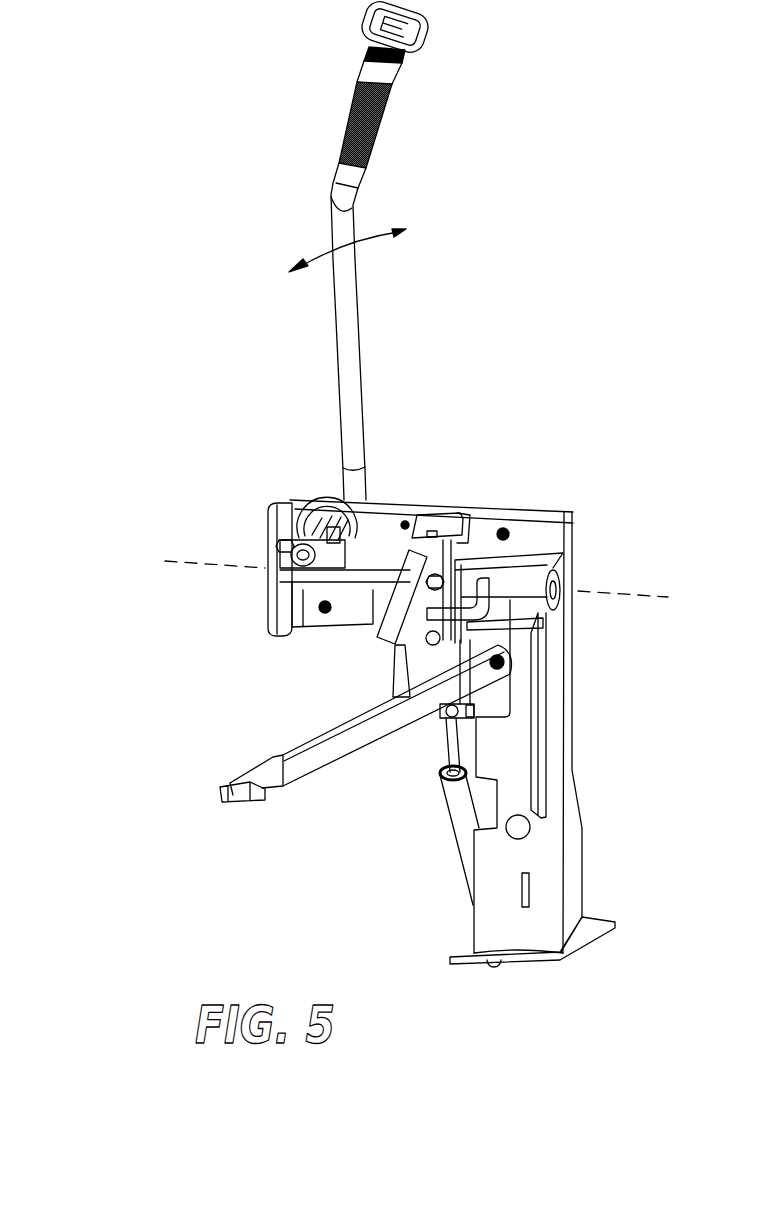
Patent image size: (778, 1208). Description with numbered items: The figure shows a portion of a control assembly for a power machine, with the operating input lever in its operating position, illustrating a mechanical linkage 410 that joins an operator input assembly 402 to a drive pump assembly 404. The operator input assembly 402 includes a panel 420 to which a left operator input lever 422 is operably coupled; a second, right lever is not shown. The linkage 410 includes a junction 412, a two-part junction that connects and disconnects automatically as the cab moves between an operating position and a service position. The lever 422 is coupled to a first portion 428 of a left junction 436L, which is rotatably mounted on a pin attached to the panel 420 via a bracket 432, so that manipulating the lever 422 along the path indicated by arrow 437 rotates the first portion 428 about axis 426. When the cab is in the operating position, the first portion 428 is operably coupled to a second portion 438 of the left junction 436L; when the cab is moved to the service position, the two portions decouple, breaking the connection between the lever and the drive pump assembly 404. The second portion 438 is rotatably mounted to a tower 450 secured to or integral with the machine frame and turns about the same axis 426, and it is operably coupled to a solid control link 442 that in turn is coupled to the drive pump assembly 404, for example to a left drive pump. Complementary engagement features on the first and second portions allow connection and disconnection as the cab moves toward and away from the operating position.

The operator input assembly 402 is at (166, 236).
The drive pump assembly 404 is at (226, 785).
The mechanical linkage 410 is at (293, 730).
The junction 412 is at (302, 522).
The panel 420 is at (518, 516).
The operator input lever 422 is at (340, 208).
The axis 426 is at (641, 595).
The first portion 428 is at (380, 550).
The bracket 432 is at (450, 522).
The left junction 436L is at (380, 640).
The arrow 437 is at (352, 245).
The second portion 438 is at (513, 620).
The control link 442 is at (370, 723).
The tower 450 is at (525, 923).